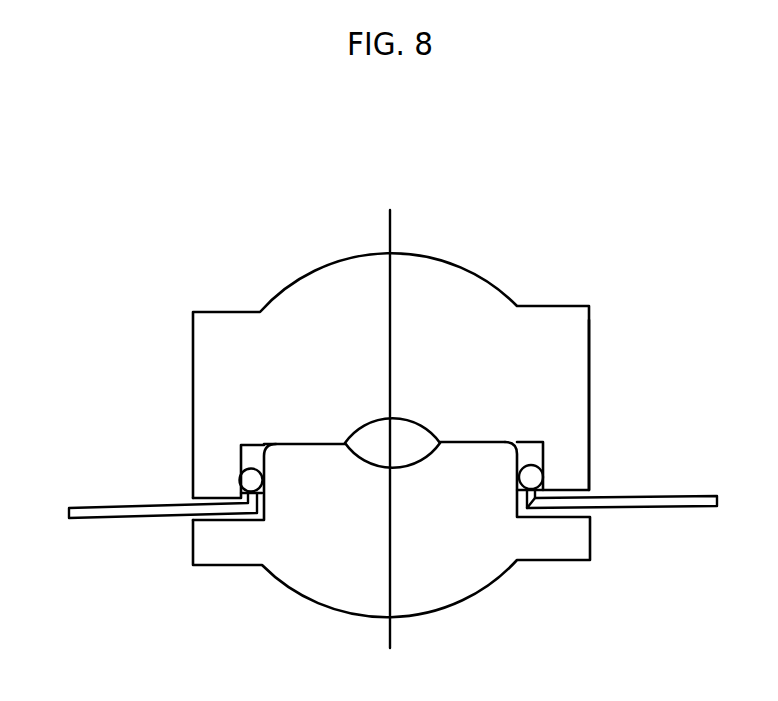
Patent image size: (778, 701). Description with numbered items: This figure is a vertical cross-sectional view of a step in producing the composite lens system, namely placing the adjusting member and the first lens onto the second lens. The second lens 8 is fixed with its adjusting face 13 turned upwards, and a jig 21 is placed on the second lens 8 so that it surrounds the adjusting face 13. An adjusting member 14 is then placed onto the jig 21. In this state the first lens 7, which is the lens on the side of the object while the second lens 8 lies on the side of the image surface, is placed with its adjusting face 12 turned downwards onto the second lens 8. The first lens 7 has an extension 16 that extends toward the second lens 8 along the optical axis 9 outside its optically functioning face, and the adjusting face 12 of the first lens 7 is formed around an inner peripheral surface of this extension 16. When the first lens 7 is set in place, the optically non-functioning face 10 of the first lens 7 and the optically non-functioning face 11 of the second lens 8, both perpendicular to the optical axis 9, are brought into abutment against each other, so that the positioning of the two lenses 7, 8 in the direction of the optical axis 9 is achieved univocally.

The first lens 7 is at (445, 259).
The second lens 8 is at (315, 602).
The optical axis 9 is at (392, 222).
The optically non-functioning face 10 is at (459, 443).
The optically non-functioning face 11 is at (318, 444).
The adjusting face 12 is at (530, 450).
The adjusting face 13 is at (527, 513).
The adjusting member 14 is at (238, 481).
The extension 16 is at (591, 454).
The jig 21 is at (645, 508).